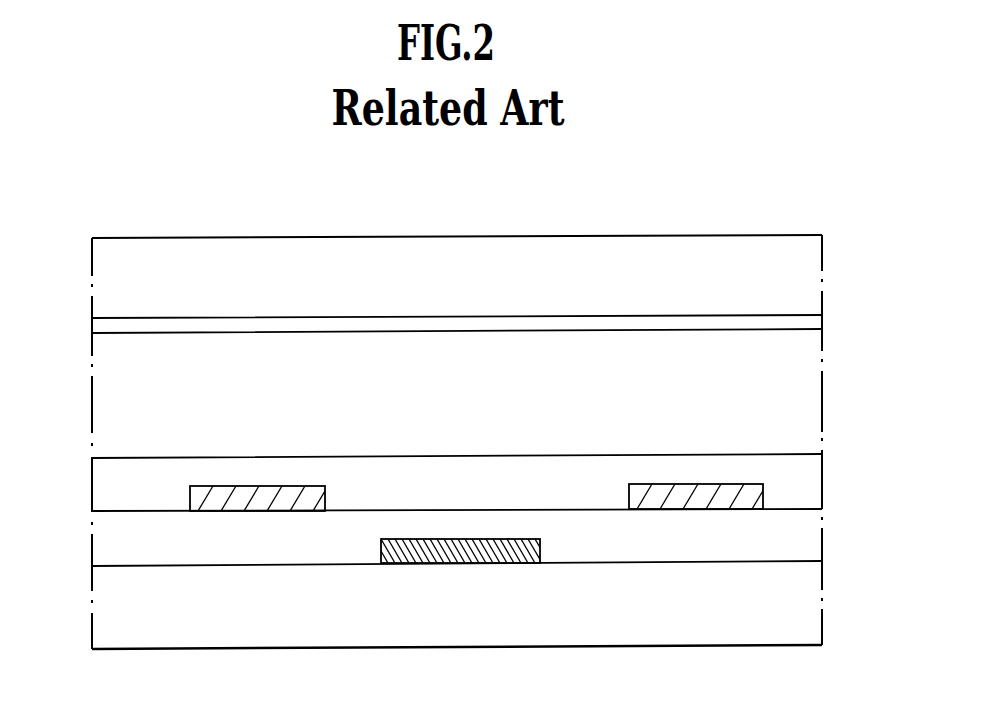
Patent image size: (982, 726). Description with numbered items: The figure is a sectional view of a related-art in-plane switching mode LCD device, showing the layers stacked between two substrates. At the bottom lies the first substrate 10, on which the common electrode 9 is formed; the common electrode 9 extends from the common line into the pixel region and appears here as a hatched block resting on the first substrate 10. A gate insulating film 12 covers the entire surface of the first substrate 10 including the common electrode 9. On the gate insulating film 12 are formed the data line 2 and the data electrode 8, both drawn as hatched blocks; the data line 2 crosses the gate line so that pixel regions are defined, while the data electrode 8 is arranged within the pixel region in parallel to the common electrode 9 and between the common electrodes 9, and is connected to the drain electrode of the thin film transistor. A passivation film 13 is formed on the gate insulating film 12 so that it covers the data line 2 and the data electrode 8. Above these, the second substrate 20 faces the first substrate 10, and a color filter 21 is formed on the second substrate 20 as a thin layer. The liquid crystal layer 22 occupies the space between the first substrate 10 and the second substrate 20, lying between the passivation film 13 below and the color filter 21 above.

The data line 2 is at (205, 500).
The data electrode 8 is at (750, 491).
The common electrode 9 is at (452, 550).
The first substrate 10 is at (807, 596).
The gate insulating film 12 is at (807, 536).
The passivation film 13 is at (807, 465).
The second substrate 20 is at (805, 275).
The color filter 21 is at (805, 323).
The liquid crystal layer 22 is at (805, 403).